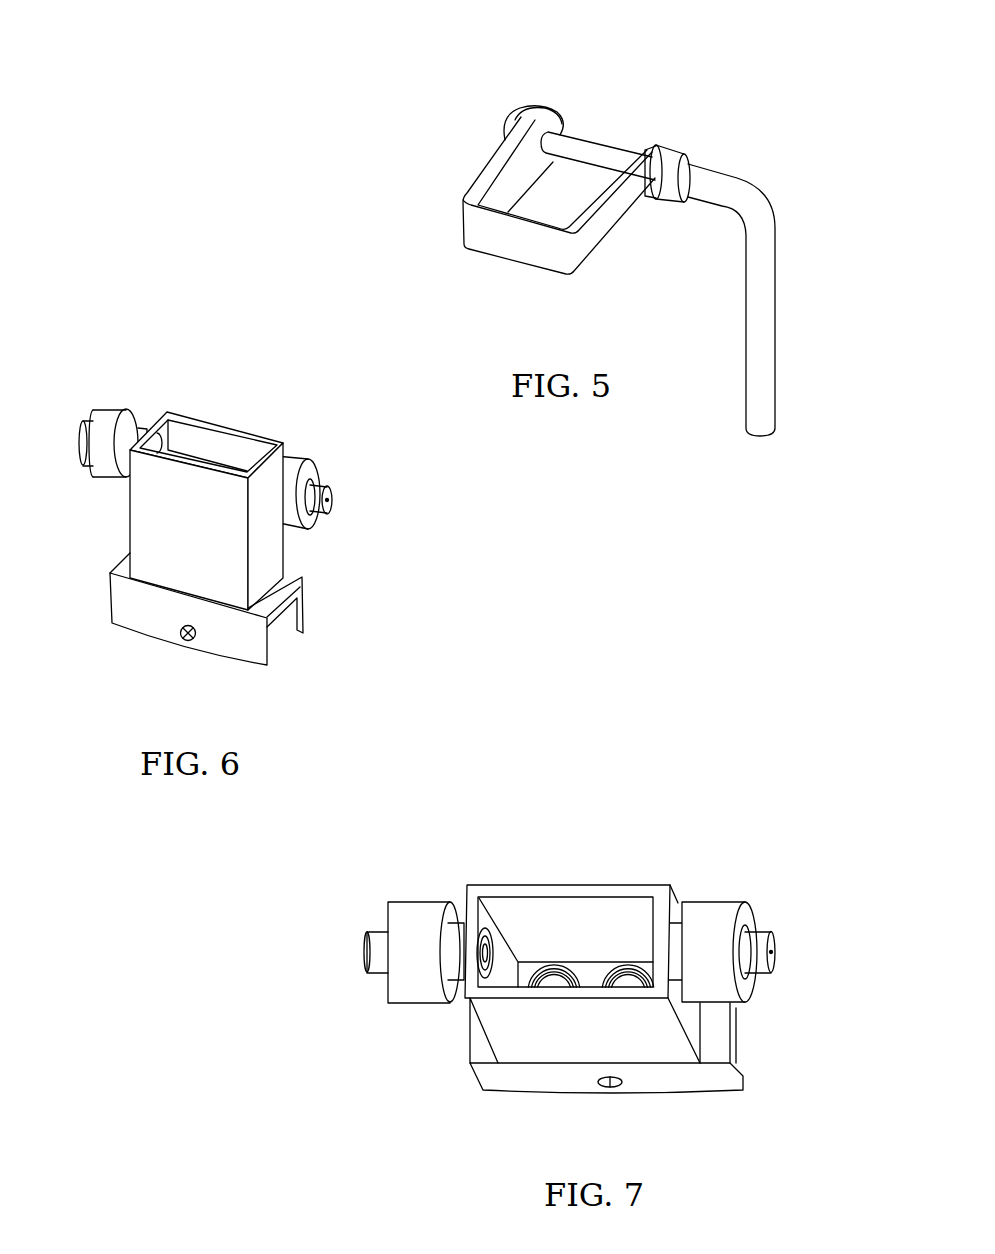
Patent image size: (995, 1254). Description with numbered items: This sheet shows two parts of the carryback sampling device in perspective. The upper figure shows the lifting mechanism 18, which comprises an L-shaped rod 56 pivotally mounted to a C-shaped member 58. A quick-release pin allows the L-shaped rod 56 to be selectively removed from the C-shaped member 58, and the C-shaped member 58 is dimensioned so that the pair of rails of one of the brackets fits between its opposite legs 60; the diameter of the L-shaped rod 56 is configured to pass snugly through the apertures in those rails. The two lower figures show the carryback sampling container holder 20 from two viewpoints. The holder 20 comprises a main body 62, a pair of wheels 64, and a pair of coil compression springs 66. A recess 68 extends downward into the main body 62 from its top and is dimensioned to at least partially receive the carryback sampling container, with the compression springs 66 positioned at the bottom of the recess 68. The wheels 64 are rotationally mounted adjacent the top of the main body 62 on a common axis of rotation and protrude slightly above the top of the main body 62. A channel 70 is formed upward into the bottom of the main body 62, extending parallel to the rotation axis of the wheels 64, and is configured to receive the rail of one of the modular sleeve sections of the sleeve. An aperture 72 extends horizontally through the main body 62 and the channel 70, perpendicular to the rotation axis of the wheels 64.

In FIG. 5, the lifting mechanism 18 is at (457, 88).
In FIG. 5, the L-shaped rod 56 is at (760, 262).
In FIG. 5, the C-shaped member 58 is at (523, 247).
In FIG. 5, the opposite legs 60 is at (492, 173).
In FIG. 6, the carryback sampling container holder 20 is at (182, 328).
In FIG. 7, the carryback sampling container holder 20 is at (652, 780).
In FIG. 6, the main body 62 is at (267, 553).
In FIG. 7, the main body 62 is at (508, 1023).
In FIG. 6, the wheels 64 is at (122, 413).
In FIG. 7, the wheels 64 is at (412, 910).
In FIG. 7, the coil compression springs 66 is at (627, 985).
In FIG. 6, the recess 68 is at (227, 452).
In FIG. 7, the recess 68 is at (518, 908).
In FIG. 6, the channel 70 is at (296, 620).
In FIG. 7, the channel 70 is at (756, 1050).
In FIG. 6, the aperture 72 is at (182, 643).
In FIG. 7, the aperture 72 is at (609, 1099).